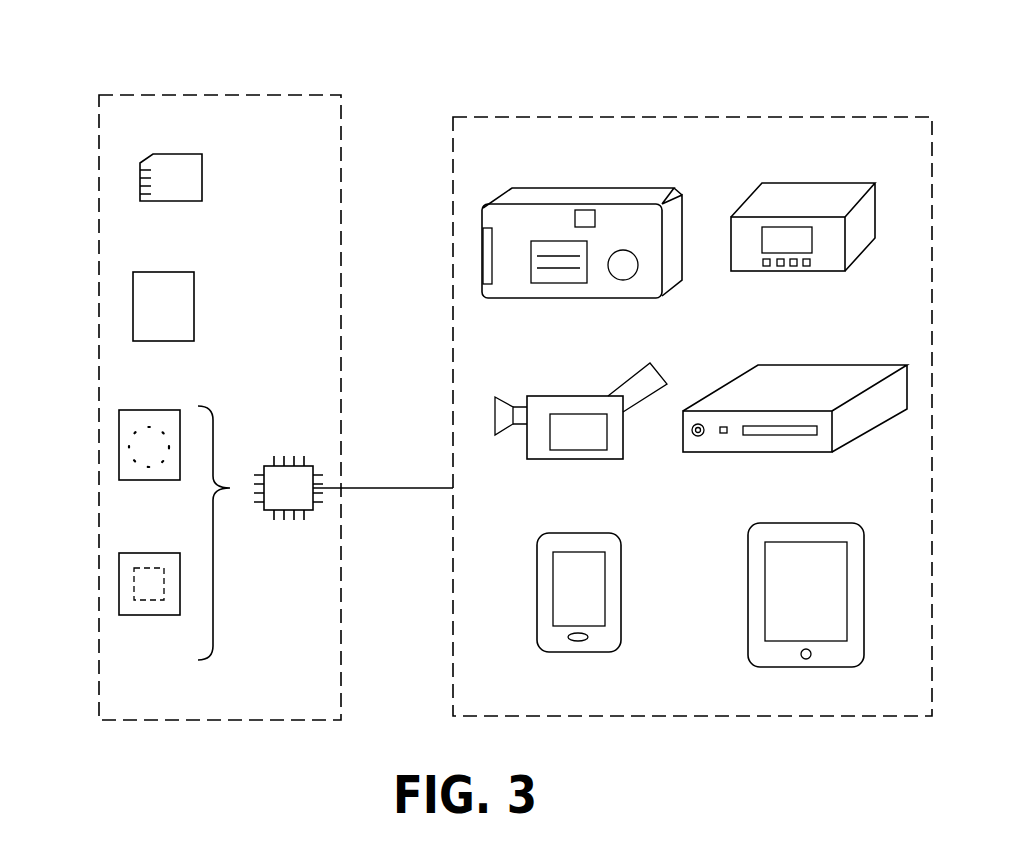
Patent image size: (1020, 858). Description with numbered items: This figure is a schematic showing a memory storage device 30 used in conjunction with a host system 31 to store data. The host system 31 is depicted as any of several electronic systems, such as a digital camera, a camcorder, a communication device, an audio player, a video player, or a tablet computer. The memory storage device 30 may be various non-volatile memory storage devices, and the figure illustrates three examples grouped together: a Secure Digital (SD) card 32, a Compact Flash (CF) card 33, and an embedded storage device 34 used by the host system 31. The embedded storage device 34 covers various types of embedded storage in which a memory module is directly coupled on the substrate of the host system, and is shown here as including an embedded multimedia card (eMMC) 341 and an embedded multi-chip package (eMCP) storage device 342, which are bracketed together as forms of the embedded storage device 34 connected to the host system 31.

The memory storage device 30 is at (208, 95).
The host system 31 is at (618, 117).
The Secure Digital (SD) card 32 is at (140, 183).
The Compact Flash (CF) card 33 is at (133, 308).
The embedded storage device 34 is at (287, 466).
The embedded multimedia card (eMMC) 341 is at (119, 448).
The embedded multi-chip package (eMCP) storage device 342 is at (119, 585).